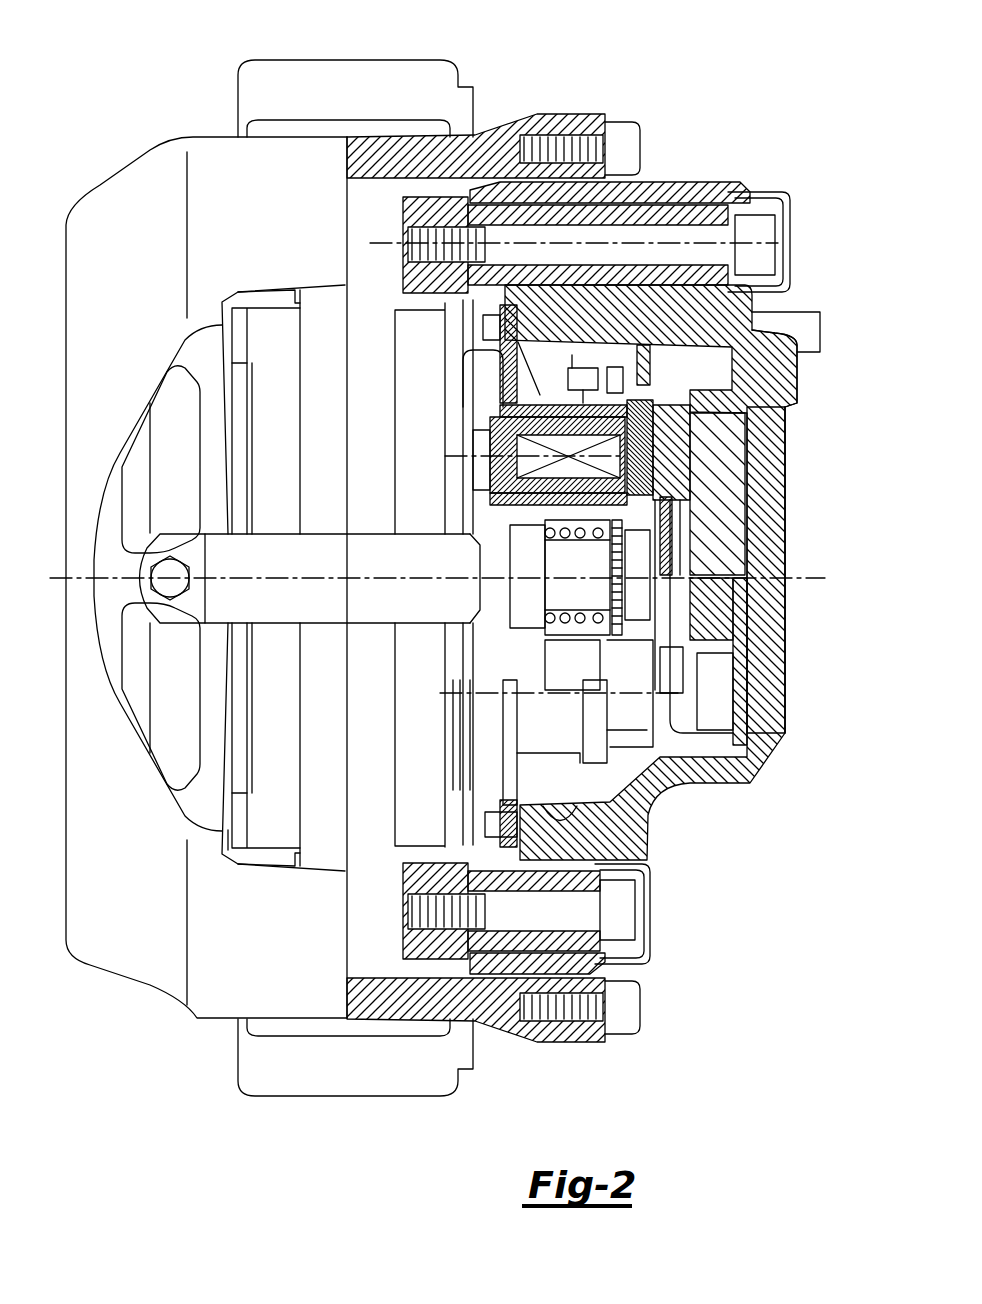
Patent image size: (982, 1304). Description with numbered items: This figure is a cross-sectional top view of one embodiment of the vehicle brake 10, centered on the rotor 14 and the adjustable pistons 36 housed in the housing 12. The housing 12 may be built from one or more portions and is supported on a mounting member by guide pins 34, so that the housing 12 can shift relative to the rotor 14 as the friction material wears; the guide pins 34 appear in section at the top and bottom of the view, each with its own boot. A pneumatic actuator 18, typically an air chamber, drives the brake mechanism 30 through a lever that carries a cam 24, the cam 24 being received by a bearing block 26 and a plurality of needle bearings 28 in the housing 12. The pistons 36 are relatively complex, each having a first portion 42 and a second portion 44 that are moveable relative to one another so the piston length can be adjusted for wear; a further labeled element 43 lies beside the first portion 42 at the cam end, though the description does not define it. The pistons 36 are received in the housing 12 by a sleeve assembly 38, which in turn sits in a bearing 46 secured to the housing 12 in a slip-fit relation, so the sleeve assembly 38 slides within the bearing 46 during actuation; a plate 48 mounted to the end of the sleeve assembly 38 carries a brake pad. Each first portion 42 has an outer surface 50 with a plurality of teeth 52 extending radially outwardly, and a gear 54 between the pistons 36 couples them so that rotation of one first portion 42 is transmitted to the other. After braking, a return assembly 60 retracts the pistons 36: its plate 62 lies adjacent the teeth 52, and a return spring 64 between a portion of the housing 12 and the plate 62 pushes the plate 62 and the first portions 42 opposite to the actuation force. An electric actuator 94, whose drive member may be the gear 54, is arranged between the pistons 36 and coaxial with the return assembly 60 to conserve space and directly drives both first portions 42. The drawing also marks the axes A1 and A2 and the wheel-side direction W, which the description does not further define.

The vehicle brake 10 is at (520, 85).
The housing 12 is at (727, 185).
The rotor 14 is at (335, 417).
The pneumatic actuator 18 is at (287, 350).
The cam 24 is at (740, 490).
The bearing block 26 is at (755, 400).
The needle bearings 28 is at (785, 440).
The brake mechanism 30 is at (675, 385).
The guide pins 34 is at (680, 205).
The pistons 36 is at (460, 465).
The sleeve assembly 38 is at (483, 378).
The first portion 42 is at (670, 385).
The housing boss 43 is at (690, 392).
The second portion 44 is at (460, 435).
The bearing 46 is at (550, 400).
The plate 48 is at (460, 415).
The outer surface 50 is at (745, 503).
The teeth 52 is at (730, 525).
The gear 54 is at (735, 560).
The return assembly 60 is at (460, 648).
The plate 62 is at (575, 688).
The return spring 64 is at (590, 560).
The electric actuator 94 is at (580, 600).
The first axis A1 is at (435, 695).
The second axis A2 is at (367, 580).
The wheel side W is at (390, 850).